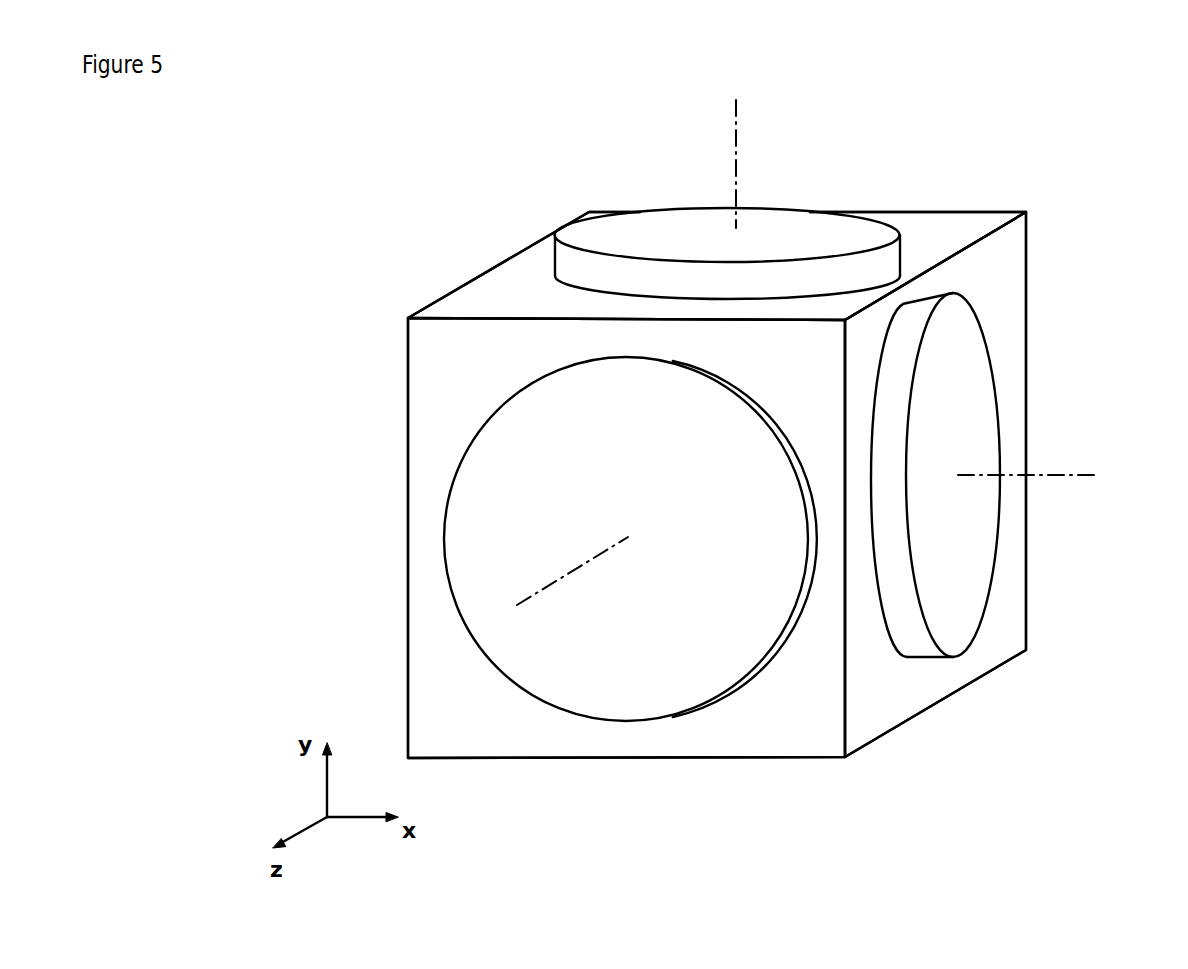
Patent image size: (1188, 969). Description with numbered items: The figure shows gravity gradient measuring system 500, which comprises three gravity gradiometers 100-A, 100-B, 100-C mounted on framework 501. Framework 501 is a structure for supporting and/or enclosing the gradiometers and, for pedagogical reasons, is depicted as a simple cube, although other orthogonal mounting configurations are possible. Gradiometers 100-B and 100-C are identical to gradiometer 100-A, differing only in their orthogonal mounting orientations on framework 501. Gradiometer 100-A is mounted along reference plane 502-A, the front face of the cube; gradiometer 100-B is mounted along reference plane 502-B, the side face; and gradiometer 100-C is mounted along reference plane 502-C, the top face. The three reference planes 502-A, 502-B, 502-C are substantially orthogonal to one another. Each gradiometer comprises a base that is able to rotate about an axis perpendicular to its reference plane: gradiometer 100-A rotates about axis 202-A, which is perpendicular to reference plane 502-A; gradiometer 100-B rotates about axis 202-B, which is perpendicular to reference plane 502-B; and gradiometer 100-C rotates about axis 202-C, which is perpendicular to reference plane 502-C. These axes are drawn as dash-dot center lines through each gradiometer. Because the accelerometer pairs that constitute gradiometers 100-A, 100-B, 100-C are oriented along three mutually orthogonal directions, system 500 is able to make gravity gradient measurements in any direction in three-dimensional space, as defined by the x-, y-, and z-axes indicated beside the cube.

The gravity gradient measuring system 500 is at (438, 206).
The framework 501 is at (717, 509).
The reference plane 502-A is at (582, 538).
The reference plane 502-B is at (980, 484).
The reference plane 502-C is at (734, 247).
The gravity gradiometer 100-A is at (627, 537).
The gravity gradiometer 100-B is at (984, 475).
The gravity gradiometer 100-C is at (728, 234).
The axis 202-A is at (550, 571).
The axis 202-B is at (1050, 451).
The axis 202-C is at (784, 159).